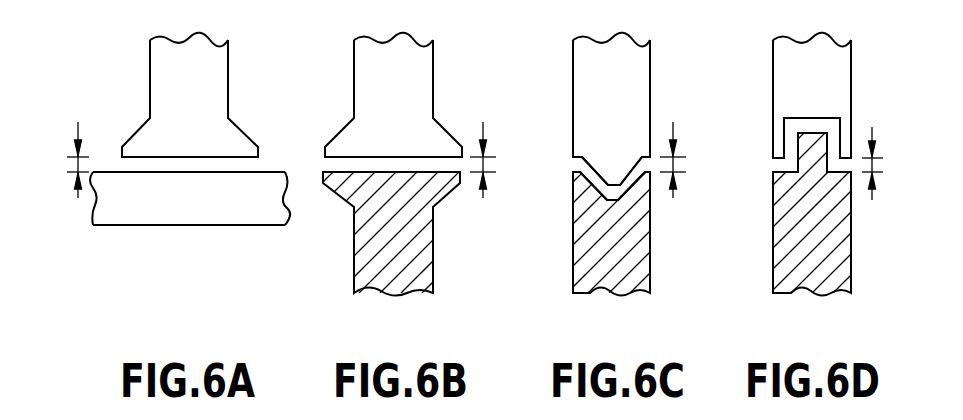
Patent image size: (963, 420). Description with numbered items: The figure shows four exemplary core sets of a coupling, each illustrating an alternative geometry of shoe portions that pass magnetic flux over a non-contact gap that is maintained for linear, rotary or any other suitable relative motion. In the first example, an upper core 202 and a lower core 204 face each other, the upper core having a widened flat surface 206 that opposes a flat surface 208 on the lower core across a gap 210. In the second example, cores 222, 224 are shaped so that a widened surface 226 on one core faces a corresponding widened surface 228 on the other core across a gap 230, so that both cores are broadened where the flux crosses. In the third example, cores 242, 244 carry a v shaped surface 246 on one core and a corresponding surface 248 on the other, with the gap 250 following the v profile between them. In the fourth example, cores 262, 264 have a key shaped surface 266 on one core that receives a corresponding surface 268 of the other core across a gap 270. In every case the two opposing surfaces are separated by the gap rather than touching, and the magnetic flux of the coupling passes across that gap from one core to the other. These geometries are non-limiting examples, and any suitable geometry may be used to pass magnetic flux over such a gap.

In FIG. 6A, the core 202 is at (152, 68).
In FIG. 6A, the core 204 is at (143, 225).
In FIG. 6A, the widened flat surface 206 is at (217, 157).
In FIG. 6A, the flat surface 208 is at (235, 172).
In FIG. 6A, the gap 210 is at (78, 166).
In FIG. 6B, the core 222 is at (354, 76).
In FIG. 6B, the core 224 is at (354, 286).
In FIG. 6B, the widened surface 226 is at (407, 157).
In FIG. 6B, the corresponding widened surface 228 is at (408, 172).
In FIG. 6B, the gap 230 is at (483, 167).
In FIG. 6C, the core 242 is at (573, 70).
In FIG. 6C, the core 244 is at (573, 275).
In FIG. 6C, the v shaped surface 246 is at (628, 167).
In FIG. 6C, the corresponding surface 248 is at (630, 183).
In FIG. 6C, the gap 250 is at (673, 167).
In FIG. 6D, the core 262 is at (773, 70).
In FIG. 6D, the core 264 is at (773, 275).
In FIG. 6D, the key shaped surface 266 is at (847, 130).
In FIG. 6D, the corresponding surface 268 is at (837, 172).
In FIG. 6D, the gap 270 is at (872, 136).